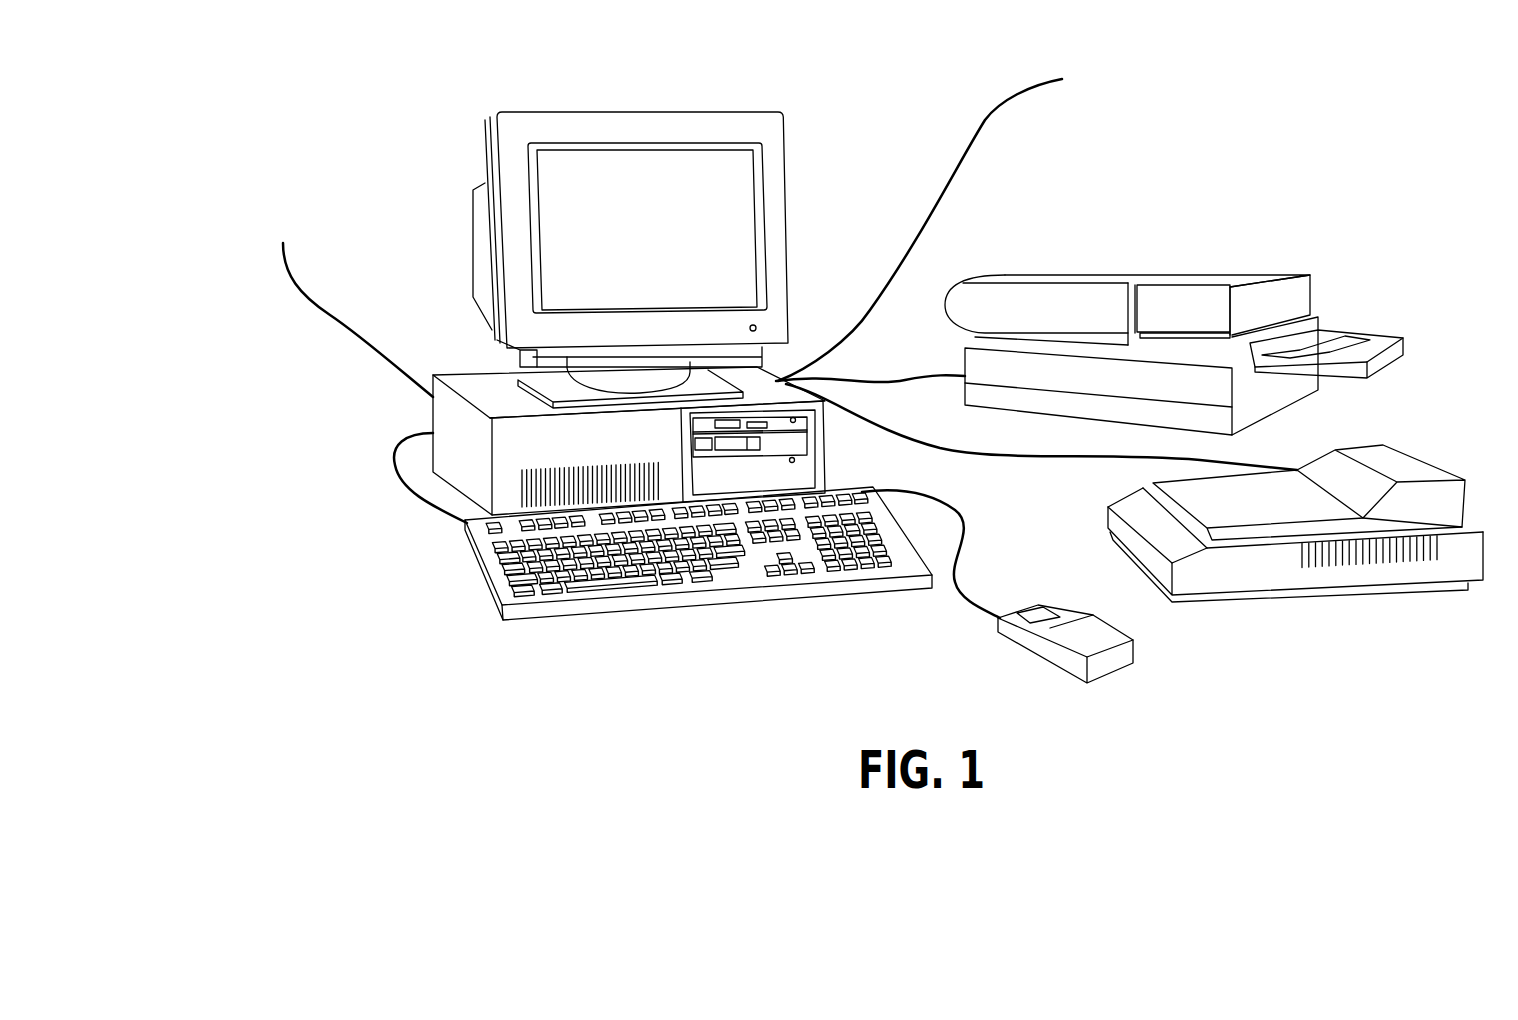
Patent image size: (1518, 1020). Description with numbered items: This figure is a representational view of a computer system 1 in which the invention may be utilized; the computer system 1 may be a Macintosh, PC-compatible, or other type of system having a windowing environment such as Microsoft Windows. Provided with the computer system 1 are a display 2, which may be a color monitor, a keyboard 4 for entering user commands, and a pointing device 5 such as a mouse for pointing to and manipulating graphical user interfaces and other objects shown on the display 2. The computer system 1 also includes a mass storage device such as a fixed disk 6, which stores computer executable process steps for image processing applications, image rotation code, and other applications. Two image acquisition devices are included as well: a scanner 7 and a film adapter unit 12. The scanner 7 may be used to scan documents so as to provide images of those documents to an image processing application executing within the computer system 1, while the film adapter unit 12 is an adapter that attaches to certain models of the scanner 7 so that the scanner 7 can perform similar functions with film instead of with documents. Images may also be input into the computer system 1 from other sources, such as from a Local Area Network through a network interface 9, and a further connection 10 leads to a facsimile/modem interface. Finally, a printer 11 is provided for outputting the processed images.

The computer system 1 is at (866, 125).
The display 2 is at (670, 112).
The keyboard 4 is at (573, 592).
The pointing device 5 is at (1103, 670).
The fixed disk 6 is at (805, 442).
The scanner 7 is at (1300, 526).
The network interface 9 is at (985, 134).
The facsimile/modem interface connection 10 is at (362, 341).
The printer 11 is at (1085, 270).
The film adapter unit 12 is at (1410, 463).